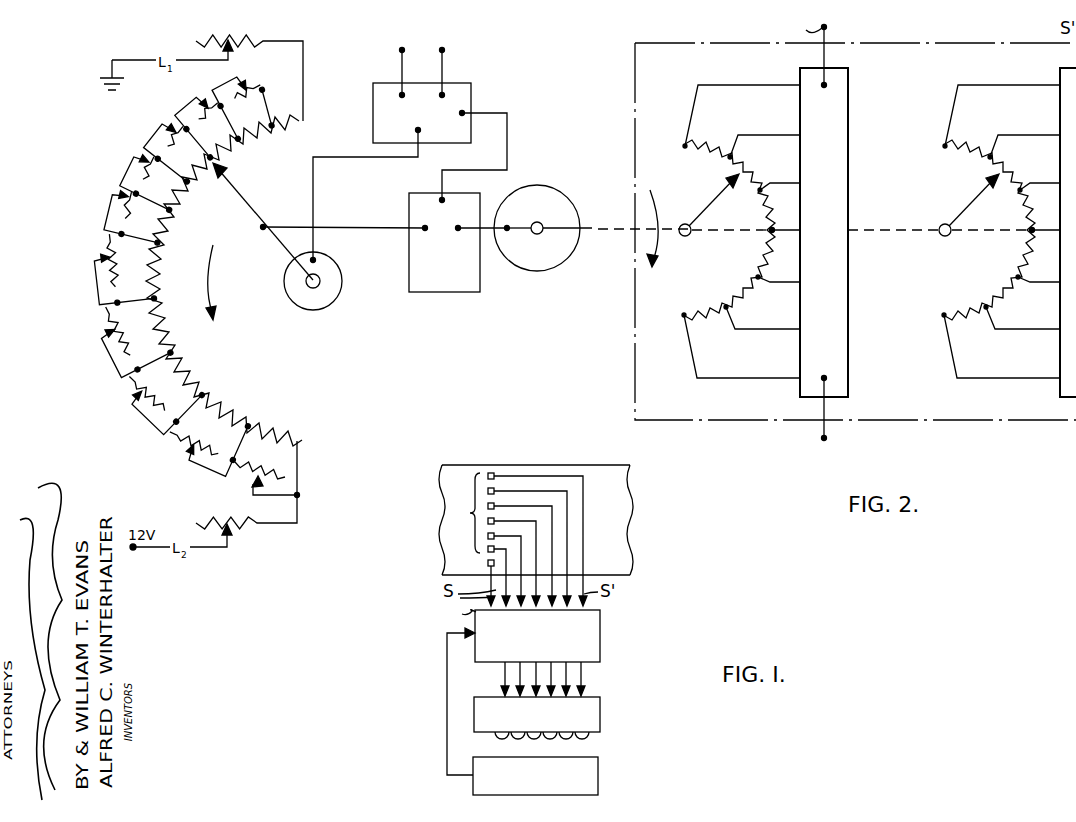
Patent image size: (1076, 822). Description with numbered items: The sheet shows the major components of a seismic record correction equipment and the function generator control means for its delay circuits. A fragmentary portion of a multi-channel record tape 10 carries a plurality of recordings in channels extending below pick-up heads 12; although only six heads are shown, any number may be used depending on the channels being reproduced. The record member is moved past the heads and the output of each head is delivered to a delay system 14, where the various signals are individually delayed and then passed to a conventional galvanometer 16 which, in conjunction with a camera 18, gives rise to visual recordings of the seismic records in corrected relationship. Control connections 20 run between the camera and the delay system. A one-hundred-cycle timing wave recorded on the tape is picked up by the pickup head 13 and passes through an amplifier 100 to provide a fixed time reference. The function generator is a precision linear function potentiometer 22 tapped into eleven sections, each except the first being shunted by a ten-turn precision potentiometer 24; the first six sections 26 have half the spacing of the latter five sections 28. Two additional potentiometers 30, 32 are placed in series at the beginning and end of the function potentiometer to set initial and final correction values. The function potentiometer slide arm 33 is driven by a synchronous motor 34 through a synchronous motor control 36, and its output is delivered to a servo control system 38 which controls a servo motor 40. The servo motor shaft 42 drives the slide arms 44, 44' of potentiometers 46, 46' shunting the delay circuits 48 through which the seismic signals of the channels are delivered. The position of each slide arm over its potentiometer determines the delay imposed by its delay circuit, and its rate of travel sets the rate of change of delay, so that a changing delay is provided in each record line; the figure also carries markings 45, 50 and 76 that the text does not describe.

In FIG. 1, the multi-channel record tape 10 is at (466, 471).
In FIG. 1, the pick-up heads 12 is at (471, 513).
In FIG. 1, the pickup head 13 is at (486, 562).
In FIG. 1, the delay system 14 is at (600, 640).
In FIG. 1, the galvanometer 16 is at (600, 710).
In FIG. 1, the camera 18 is at (598, 776).
In FIG. 1, the control connections 20 is at (447, 692).
In FIG. 1, the amplifier 100 is at (454, 612).
In FIG. 2, the function potentiometer 22 is at (318, 438).
In FIG. 2, the ten-turn precision potentiometer 24 is at (233, 82).
In FIG. 2, the first six sections 26 is at (128, 143).
In FIG. 2, the latter five sections 28 is at (76, 285).
In FIG. 2, the potentiometer 30 is at (222, 34).
In FIG. 2, the potentiometer 32 is at (209, 517).
In FIG. 2, the function potentiometer slide arm 33 is at (244, 208).
In FIG. 2, the synchronous motor 34 is at (334, 296).
In FIG. 2, the synchronous motor control 36 is at (471, 98).
In FIG. 2, the servo control system 38 is at (460, 292).
In FIG. 2, the servo motor 40 is at (566, 198).
In FIG. 2, the servo motor shaft 42 is at (592, 231).
In FIG. 2, the slide arm 44 is at (704, 205).
In FIG. 2, the slide arm 44' is at (961, 205).
In FIG. 2, the rotation arrow 45 is at (659, 242).
In FIG. 2, the potentiometer 46 is at (736, 231).
In FIG. 2, the potentiometer 46' is at (996, 231).
In FIG. 2, the delay circuit 48 is at (848, 178).
In FIG. 2, the input terminal S 50 is at (828, 28).
In FIG. 2, the output terminal 76 is at (826, 440).